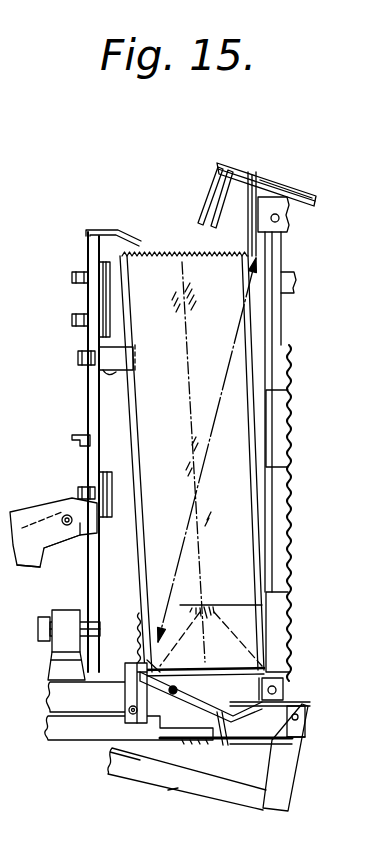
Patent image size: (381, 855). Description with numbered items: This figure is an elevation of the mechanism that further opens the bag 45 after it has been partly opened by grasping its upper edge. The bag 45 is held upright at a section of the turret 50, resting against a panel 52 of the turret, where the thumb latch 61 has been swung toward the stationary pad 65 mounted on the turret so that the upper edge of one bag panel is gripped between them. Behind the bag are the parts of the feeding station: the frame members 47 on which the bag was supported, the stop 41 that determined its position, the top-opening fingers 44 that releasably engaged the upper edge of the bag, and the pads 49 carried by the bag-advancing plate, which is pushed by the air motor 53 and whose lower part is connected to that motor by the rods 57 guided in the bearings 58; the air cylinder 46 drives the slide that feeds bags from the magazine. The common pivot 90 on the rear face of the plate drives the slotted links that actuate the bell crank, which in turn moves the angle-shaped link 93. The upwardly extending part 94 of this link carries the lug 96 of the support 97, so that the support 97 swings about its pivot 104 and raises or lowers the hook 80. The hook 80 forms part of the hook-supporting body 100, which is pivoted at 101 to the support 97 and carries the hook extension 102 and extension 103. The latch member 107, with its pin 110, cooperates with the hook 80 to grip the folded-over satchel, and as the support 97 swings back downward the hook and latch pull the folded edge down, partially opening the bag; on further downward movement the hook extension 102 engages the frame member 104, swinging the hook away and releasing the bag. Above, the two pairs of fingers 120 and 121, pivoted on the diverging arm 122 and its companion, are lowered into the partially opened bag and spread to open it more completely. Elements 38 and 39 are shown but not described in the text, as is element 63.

The bracket 38 is at (24, 513).
The bracket arm 39 is at (22, 563).
The stop 41 is at (112, 370).
The top-opening fingers 44 is at (137, 232).
The bag 45 is at (150, 398).
The air cylinder 46 is at (98, 570).
The frame members 47 is at (55, 684).
The pads 49 is at (100, 293).
The turret 50 is at (303, 410).
The panels 52 is at (282, 452).
The air motor 53 is at (72, 443).
The rods 57 is at (44, 622).
The bearings 58 is at (74, 612).
The thumb latch 61 is at (250, 188).
The post 63 is at (272, 263).
The stationary pad 65 is at (278, 241).
The hook 80 is at (125, 640).
The common pivot 90 is at (73, 521).
The angle-shaped link 93 is at (110, 757).
The upwardly extending part 94 is at (288, 778).
The lug or arm 96 is at (304, 733).
The support 97 is at (218, 714).
The hook-supporting body 100 is at (125, 693).
The pivot 101 is at (128, 717).
The hook extension 102 is at (160, 760).
The extension 103 is at (274, 740).
The frame member 104 is at (283, 690).
The latch member 107 is at (197, 693).
The pin or extension 110 is at (158, 664).
The fingers 120 is at (216, 170).
The fingers 121 is at (212, 200).
The diverging arm 122 is at (292, 185).